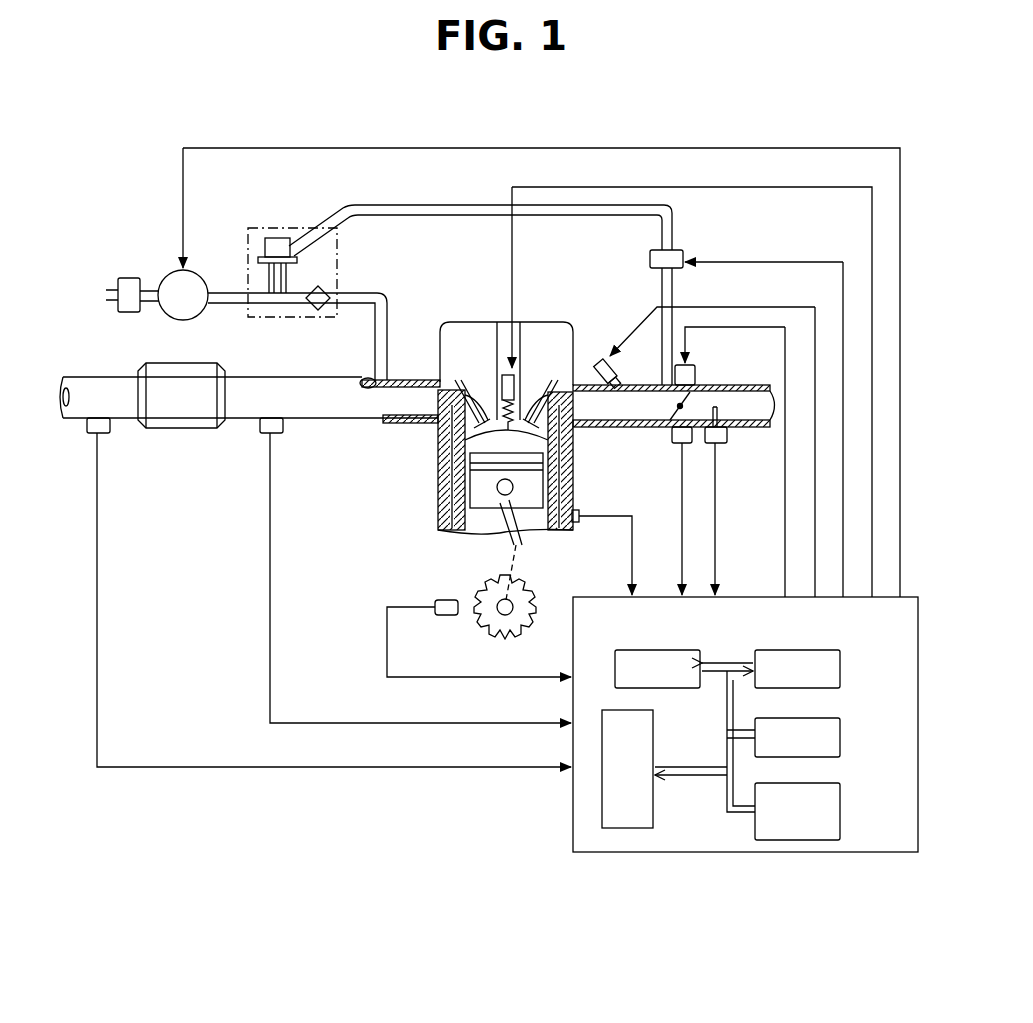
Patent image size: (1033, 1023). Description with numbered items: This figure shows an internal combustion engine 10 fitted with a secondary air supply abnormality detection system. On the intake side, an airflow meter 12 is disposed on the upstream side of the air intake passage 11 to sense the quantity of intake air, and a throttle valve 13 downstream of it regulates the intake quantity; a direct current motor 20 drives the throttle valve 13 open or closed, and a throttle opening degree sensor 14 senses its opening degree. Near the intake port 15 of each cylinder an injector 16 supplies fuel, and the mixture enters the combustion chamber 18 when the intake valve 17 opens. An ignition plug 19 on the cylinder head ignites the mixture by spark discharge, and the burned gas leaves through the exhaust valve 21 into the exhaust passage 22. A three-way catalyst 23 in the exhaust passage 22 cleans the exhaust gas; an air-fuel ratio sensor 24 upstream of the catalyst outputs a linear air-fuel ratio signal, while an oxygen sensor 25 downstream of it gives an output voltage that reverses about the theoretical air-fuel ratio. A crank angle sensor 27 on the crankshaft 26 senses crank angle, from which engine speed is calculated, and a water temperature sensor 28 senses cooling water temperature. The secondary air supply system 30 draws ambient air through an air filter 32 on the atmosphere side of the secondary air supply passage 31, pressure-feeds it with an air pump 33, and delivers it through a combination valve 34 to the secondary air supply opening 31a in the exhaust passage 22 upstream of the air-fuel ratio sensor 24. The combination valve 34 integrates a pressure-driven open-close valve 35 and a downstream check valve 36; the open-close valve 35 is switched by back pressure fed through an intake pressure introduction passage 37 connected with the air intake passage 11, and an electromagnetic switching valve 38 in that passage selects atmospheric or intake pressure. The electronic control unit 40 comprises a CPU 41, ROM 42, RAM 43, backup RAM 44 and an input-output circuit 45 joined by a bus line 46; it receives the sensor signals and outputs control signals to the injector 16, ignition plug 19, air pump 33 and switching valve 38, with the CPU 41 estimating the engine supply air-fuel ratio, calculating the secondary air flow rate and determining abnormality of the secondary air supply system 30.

The internal combustion engine 10 is at (575, 393).
The air intake passage 11 is at (768, 385).
The airflow meter 12 is at (718, 446).
The throttle valve 13 is at (668, 421).
The throttle opening degree sensor 14 is at (680, 446).
The intake port 15 is at (578, 440).
The injector 16 is at (600, 356).
The intake valve 17 is at (548, 378).
The combustion chamber 18 is at (490, 442).
The ignition plug 19 is at (514, 345).
The direct current motor 20 is at (696, 372).
The exhaust valve 21 is at (480, 392).
The exhaust passage 22 is at (414, 380).
The three-way catalyst 23 is at (200, 428).
The air-fuel ratio sensor 24 is at (288, 432).
The oxygen sensor 25 is at (112, 432).
The crankshaft 26 is at (512, 600).
The crank angle sensor 27 is at (447, 600).
The water temperature sensor 28 is at (585, 518).
The secondary air supply system 30 is at (238, 222).
The secondary air supply passage 31 is at (366, 294).
The secondary air supply opening 31a is at (366, 379).
The air filter 32 is at (128, 278).
The air pump 33 is at (170, 276).
The combination valve 34 is at (337, 237).
The open-close valve 35 is at (275, 238).
The check valve 36 is at (310, 305).
The intake pressure introduction passage 37 is at (674, 280).
The electromagnetic switching valve 38 is at (685, 252).
The electronic control unit 40 is at (691, 724).
The CPU 41 is at (690, 652).
The ROM 42 is at (840, 662).
The RAM 43 is at (840, 733).
The backup RAM 44 is at (840, 808).
The input-output circuit 45 is at (653, 732).
The bus line 46 is at (697, 780).